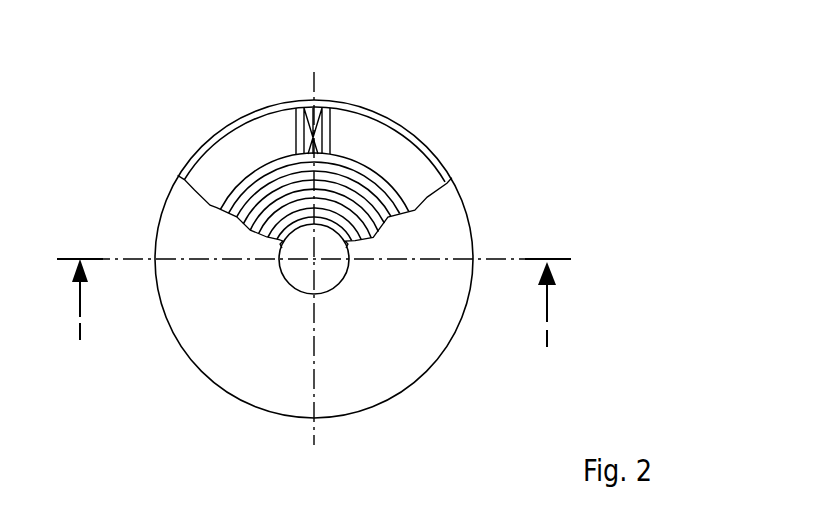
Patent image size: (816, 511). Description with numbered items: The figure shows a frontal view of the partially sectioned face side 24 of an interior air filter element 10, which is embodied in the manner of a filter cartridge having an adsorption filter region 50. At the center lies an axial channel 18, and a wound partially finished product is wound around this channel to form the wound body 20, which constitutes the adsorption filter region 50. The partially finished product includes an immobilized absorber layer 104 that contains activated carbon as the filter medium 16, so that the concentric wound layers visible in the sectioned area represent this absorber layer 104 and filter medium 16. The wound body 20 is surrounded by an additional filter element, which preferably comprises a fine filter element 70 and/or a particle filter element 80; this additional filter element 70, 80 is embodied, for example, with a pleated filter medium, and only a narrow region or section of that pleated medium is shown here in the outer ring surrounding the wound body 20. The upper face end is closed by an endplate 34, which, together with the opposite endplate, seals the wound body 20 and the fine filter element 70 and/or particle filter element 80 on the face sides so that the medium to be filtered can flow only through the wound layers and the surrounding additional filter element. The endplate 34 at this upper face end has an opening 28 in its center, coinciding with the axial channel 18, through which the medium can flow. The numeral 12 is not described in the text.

The filter element 10 is at (178, 126).
The housing element 12 is at (395, 178).
The filter medium 16 is at (395, 178).
The axial channel 18 is at (309, 287).
The wound body 20 is at (395, 178).
The face side 24 is at (314, 277).
The opening 28 is at (300, 288).
The endplate 34 is at (383, 373).
The adsorption filter region 50 is at (395, 178).
The fine filter element 70 is at (332, 120).
The particle filter element 80 is at (382, 147).
The immobilized absorber layer 104 is at (377, 197).